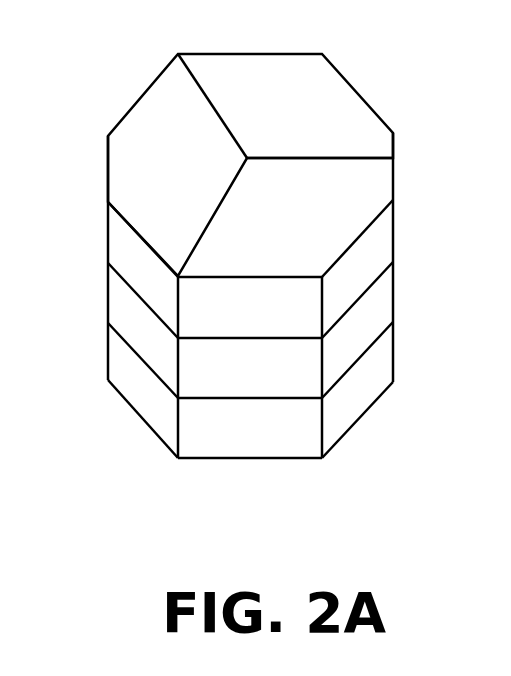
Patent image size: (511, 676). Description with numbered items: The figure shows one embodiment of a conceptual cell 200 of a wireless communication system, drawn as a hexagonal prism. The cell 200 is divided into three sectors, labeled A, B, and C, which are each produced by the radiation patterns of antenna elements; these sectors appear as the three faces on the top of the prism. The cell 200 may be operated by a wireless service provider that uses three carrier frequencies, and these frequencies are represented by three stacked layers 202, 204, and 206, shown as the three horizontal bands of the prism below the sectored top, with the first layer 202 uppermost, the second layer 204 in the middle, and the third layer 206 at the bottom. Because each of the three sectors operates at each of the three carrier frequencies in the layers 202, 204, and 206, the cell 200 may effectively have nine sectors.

The conceptual cell 200 is at (122, 52).
The first layer 202 is at (393, 203).
The second layer 204 is at (393, 263).
The third layer 206 is at (393, 323).